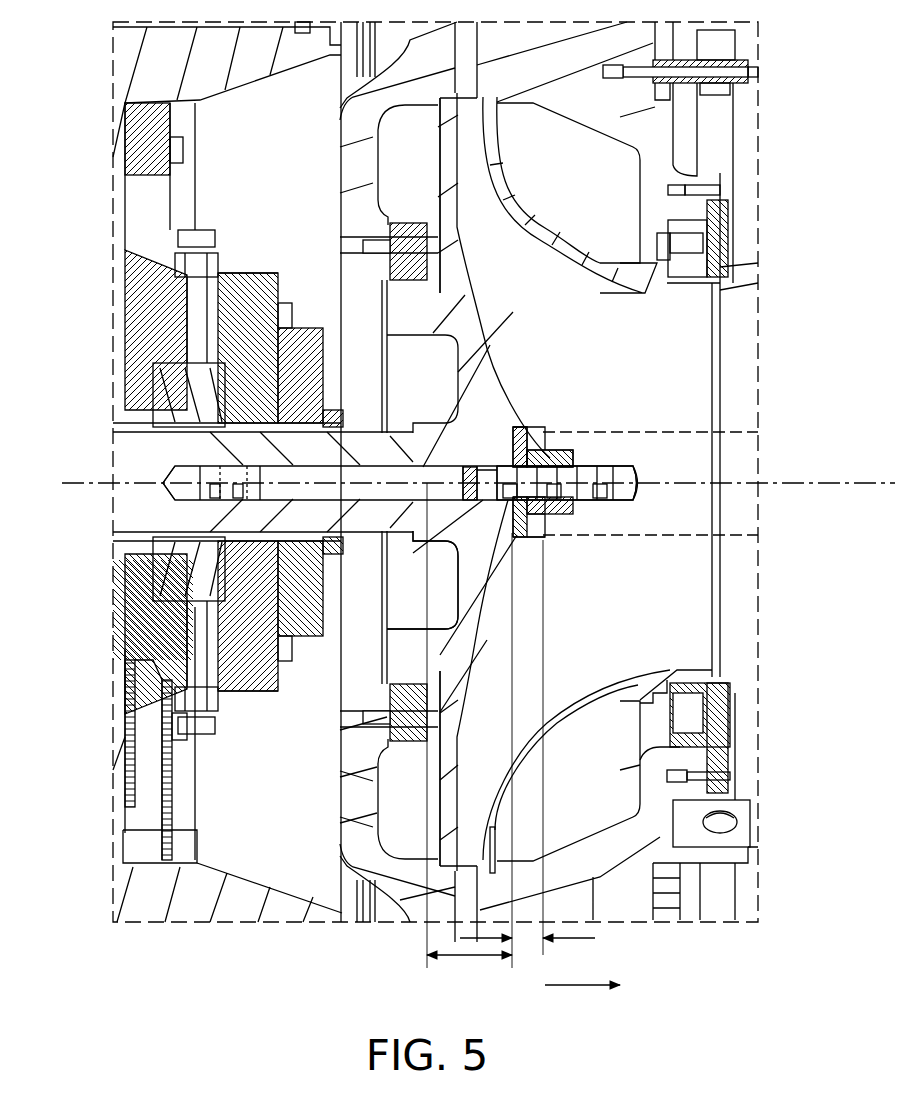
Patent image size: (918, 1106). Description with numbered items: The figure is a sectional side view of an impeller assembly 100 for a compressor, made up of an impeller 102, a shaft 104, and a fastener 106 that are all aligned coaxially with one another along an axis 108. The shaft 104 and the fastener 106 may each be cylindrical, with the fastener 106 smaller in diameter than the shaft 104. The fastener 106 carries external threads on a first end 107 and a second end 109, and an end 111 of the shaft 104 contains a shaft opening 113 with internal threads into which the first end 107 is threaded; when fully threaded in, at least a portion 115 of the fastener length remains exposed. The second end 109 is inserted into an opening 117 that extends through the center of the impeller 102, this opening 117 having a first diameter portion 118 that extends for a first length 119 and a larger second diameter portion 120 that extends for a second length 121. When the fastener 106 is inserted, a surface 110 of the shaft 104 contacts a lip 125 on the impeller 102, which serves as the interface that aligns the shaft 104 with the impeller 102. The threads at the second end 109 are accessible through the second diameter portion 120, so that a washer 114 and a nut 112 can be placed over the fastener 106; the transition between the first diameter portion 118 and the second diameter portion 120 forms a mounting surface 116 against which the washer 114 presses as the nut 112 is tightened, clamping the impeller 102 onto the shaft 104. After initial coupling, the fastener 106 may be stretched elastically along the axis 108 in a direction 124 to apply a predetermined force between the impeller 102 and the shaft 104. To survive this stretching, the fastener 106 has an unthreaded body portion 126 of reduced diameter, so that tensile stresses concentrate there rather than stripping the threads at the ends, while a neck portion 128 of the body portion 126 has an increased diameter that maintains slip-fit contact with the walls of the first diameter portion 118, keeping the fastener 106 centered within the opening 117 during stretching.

The impeller assembly 100 is at (778, 381).
The impeller 102 is at (630, 563).
The shaft 104 is at (135, 455).
The fastener 106 is at (626, 459).
The first end 107 is at (200, 501).
The axis 108 is at (737, 483).
The second end 109 is at (637, 456).
The surface 110 is at (414, 428).
The end 111 is at (433, 458).
The nut 112 is at (557, 463).
The shaft opening 113 is at (523, 558).
The washer 114 is at (537, 426).
The portion 115 is at (598, 459).
The mounting surface 116 is at (546, 542).
The opening 117 is at (487, 462).
The first diameter portion 118 is at (536, 545).
The first length 119 is at (480, 955).
The second diameter portion 120 is at (553, 527).
The second length 121 is at (573, 940).
The direction 124 is at (578, 987).
The lip 125 is at (414, 540).
The body portion 126 is at (275, 490).
The neck portion 128 is at (541, 542).